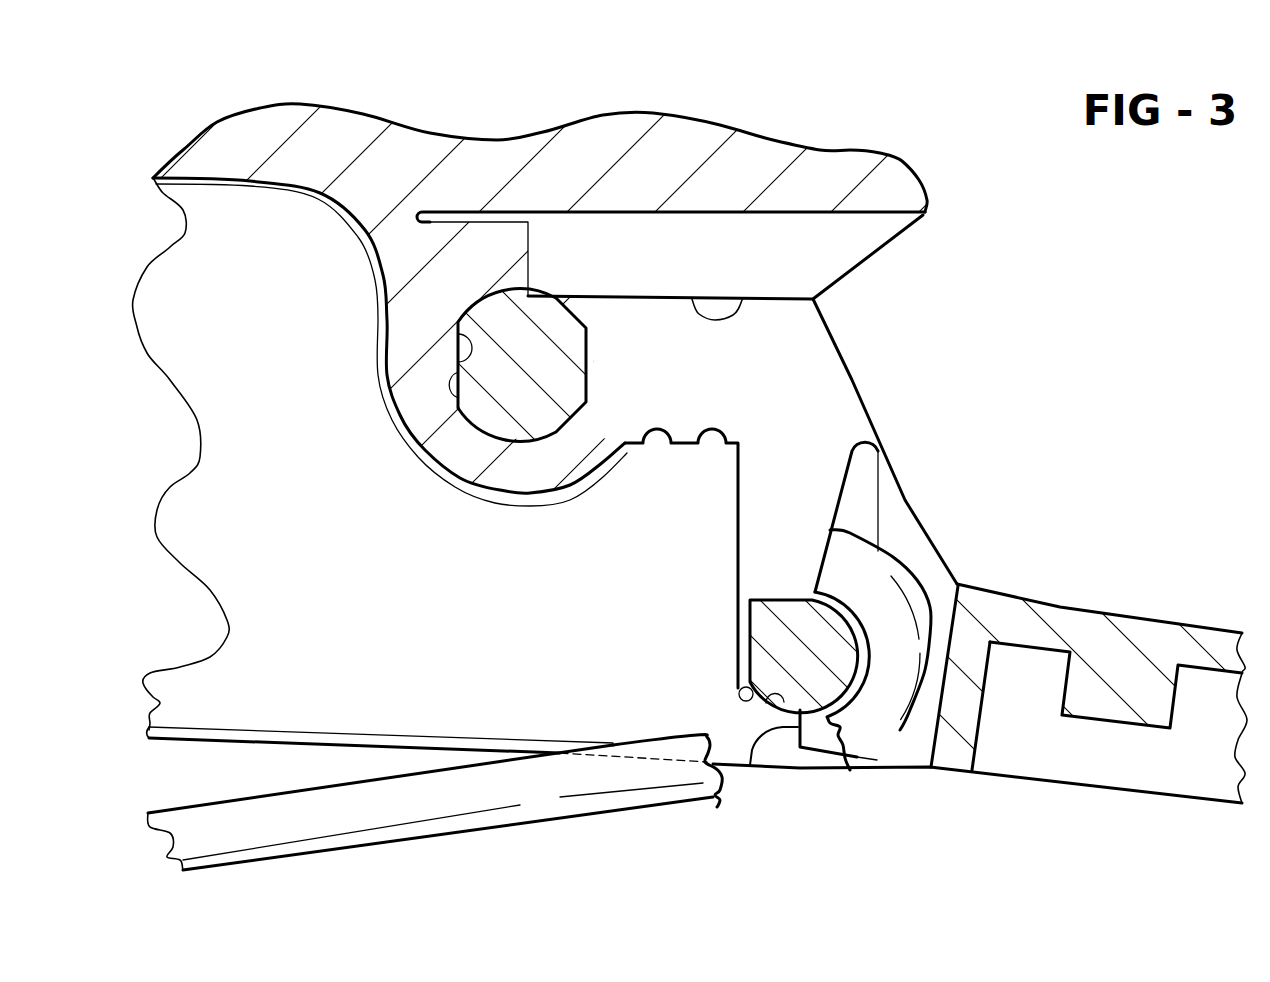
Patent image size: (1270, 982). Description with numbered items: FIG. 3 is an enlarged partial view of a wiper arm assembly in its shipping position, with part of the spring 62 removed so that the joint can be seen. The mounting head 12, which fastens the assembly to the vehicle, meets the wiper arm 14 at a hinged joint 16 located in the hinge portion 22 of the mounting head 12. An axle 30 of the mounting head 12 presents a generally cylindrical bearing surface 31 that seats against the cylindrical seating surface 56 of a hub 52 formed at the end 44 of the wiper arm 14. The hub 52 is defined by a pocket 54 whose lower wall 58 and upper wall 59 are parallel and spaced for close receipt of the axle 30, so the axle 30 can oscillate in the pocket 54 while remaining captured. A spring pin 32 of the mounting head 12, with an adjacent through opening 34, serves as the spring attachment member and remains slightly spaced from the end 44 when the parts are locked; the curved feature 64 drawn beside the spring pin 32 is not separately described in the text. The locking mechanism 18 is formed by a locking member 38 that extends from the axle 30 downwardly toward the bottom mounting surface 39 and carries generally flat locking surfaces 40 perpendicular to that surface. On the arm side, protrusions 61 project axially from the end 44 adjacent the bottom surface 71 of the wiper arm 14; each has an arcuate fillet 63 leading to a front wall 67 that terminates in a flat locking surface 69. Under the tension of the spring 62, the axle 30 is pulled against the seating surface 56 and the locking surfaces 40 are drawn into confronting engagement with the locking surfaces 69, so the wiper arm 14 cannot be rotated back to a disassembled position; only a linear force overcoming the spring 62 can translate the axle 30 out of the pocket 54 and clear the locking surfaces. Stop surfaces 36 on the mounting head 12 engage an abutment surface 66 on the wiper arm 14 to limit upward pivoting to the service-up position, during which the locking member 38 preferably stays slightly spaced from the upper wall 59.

The mounting head 12 is at (1170, 627).
The wiper arm 14 is at (218, 122).
The hinged joint 16 is at (571, 104).
The locking mechanism 18 is at (657, 659).
The hinge portion 22 is at (857, 393).
The axle 30 is at (572, 312).
The bearing surface 31 is at (455, 383).
The spring pin 32 is at (883, 628).
The through opening 34 is at (933, 740).
The stop surfaces 36 is at (872, 442).
The locking member 38 is at (818, 755).
The bottom mounting surface 39 is at (953, 770).
The locking surfaces 40 is at (757, 770).
The end 44 is at (740, 520).
The hub 52 is at (888, 358).
The pocket 54 is at (720, 450).
The seating surface 56 is at (412, 303).
The lower wall 58 is at (652, 431).
The upper wall 59 is at (742, 300).
The protrusions 61 is at (795, 770).
The spring 62 is at (388, 847).
The arcuate fillets 63 is at (738, 687).
The hook 64 is at (886, 556).
The abutment surface 66 is at (857, 268).
The front wall 67 is at (778, 688).
The locking surfaces 69 is at (833, 758).
The bottom surface 71 is at (467, 757).